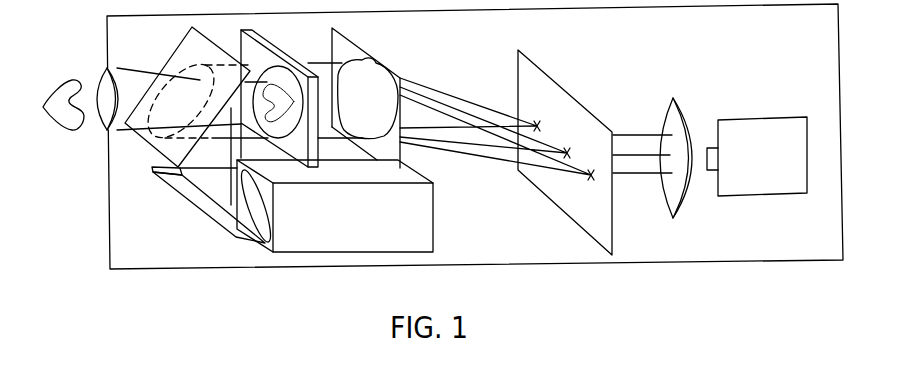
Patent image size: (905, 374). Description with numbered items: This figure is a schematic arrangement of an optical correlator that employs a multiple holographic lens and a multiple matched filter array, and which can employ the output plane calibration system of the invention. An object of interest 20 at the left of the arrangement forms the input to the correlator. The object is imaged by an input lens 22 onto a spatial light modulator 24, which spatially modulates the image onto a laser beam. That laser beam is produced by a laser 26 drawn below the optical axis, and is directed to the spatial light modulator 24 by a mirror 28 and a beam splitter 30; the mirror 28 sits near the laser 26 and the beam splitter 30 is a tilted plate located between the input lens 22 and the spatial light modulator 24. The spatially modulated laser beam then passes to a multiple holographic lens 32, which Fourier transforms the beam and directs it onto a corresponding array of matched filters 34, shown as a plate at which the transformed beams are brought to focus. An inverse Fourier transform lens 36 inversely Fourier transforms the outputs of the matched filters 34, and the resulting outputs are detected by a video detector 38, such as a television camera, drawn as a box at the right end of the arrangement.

The object of interest 20 is at (56, 90).
The input lens 22 is at (107, 68).
The spatial light modulator 24 is at (277, 46).
The laser 26 is at (395, 228).
The mirror 28 is at (178, 194).
The beam splitter 30 is at (180, 43).
The multiple holographic lens 32 is at (368, 52).
The array of matched filters 34 is at (543, 68).
The inverse Fourier transform lens 36 is at (683, 108).
The video detector 38 is at (775, 118).